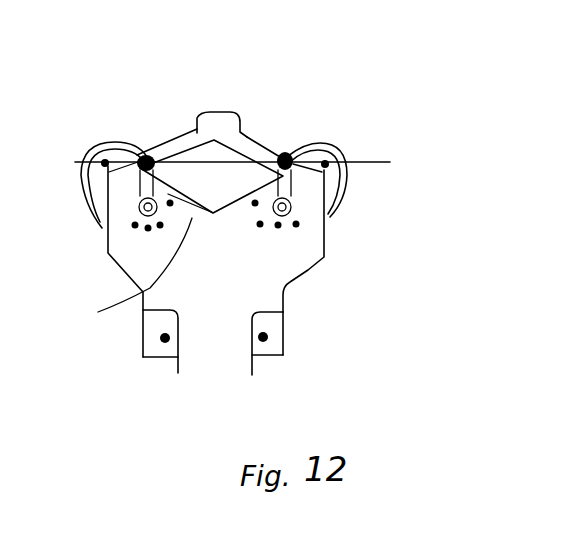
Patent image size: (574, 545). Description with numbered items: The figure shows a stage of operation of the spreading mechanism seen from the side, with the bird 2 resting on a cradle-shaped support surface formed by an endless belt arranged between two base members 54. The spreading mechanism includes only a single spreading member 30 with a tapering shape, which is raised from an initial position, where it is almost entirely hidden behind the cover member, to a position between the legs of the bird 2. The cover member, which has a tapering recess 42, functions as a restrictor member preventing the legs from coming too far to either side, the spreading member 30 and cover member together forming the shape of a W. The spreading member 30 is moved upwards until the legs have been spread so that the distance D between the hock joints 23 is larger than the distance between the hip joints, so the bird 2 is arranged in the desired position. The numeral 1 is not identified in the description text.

The frame 1 is at (283, 267).
The bird 2 is at (248, 134).
The hock joints 23 is at (142, 152).
The spreading member 30 is at (177, 177).
The tapering recess 42 is at (127, 276).
The base members 54 is at (280, 328).